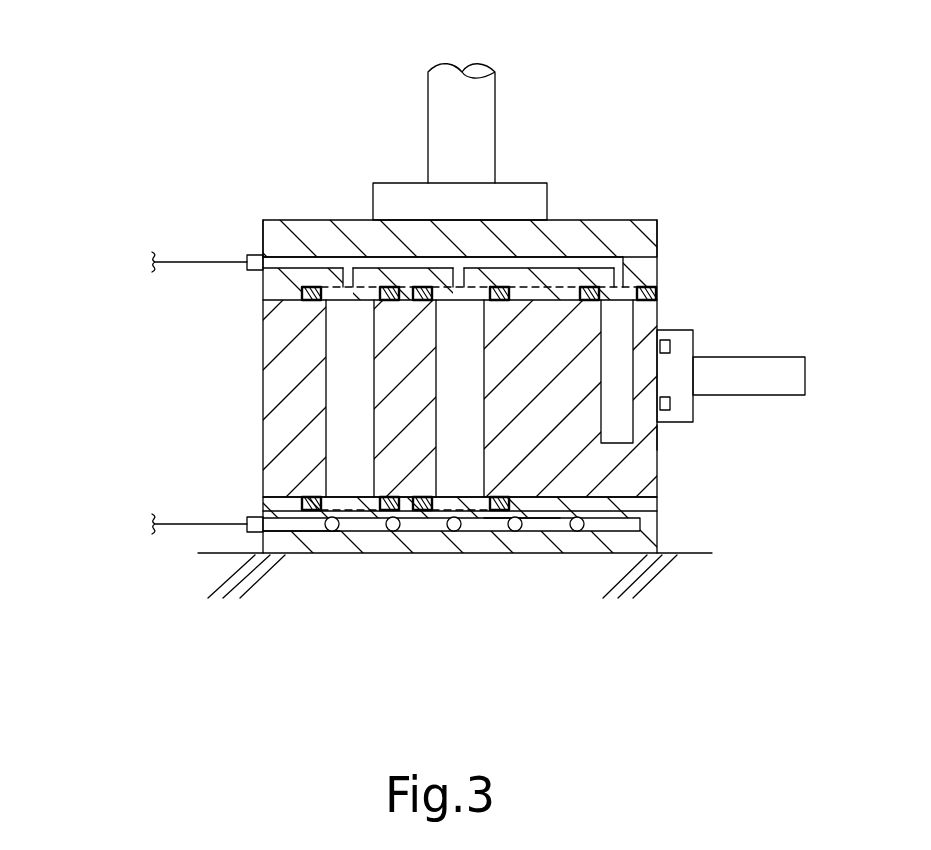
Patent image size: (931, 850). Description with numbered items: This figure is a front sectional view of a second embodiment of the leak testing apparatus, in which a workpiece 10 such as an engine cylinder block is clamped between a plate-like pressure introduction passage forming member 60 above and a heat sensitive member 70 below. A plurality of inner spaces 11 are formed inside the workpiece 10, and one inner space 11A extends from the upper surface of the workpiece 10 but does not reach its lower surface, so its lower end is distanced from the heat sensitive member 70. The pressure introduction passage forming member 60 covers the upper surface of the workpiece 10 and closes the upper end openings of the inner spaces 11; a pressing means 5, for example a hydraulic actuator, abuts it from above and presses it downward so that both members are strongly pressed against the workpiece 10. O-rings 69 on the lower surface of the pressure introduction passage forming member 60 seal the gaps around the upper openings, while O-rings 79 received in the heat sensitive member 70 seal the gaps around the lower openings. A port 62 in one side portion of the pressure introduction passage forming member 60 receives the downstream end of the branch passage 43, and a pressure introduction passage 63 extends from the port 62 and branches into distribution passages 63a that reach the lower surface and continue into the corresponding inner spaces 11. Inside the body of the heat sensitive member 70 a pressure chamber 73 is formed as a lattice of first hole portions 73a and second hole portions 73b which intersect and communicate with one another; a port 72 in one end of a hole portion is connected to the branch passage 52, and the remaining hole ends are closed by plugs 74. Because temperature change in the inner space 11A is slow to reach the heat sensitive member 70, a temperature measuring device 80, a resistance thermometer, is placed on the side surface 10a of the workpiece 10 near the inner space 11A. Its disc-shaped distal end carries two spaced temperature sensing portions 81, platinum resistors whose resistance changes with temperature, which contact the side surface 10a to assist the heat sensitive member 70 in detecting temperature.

The pressing means 5 is at (495, 98).
The workpiece 10 is at (263, 355).
The side surface 10a is at (660, 437).
The inner spaces 11 is at (335, 437).
The inner space 11A is at (624, 430).
The branch passage 43 is at (187, 262).
The branch passage 52 is at (179, 529).
The pressure introduction passage forming member 60 is at (650, 220).
The port 62 is at (255, 255).
The pressure introduction passage 63 is at (333, 262).
The distribution passages 63a is at (624, 263).
The O-rings 69 is at (642, 290).
The heat sensitive member 70 is at (423, 559).
The port 72 is at (258, 517).
The pressure chamber 73 is at (377, 542).
The first hole portions 73a is at (303, 540).
The second hole portions 73b is at (519, 527).
The plugs 74 is at (657, 524).
The O-rings 79 is at (468, 505).
The temperature measuring device 80 is at (801, 353).
The temperature sensing portions 81 is at (669, 346).